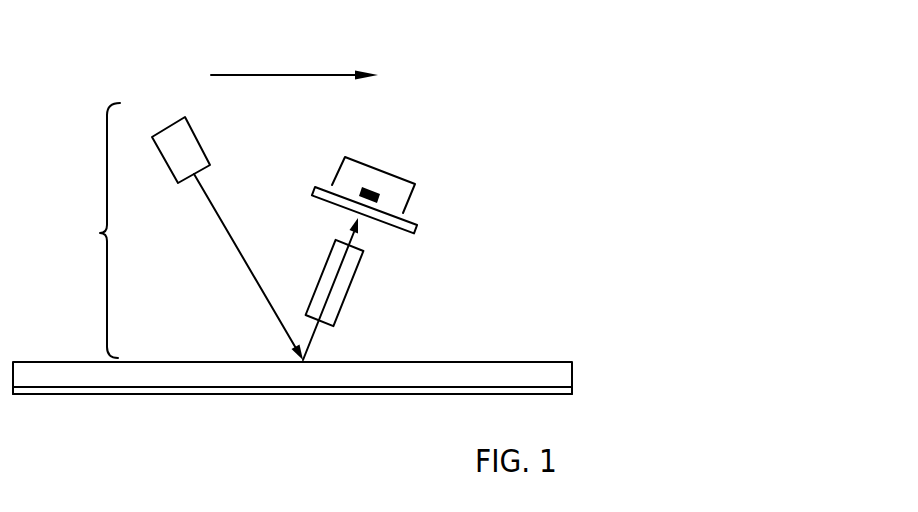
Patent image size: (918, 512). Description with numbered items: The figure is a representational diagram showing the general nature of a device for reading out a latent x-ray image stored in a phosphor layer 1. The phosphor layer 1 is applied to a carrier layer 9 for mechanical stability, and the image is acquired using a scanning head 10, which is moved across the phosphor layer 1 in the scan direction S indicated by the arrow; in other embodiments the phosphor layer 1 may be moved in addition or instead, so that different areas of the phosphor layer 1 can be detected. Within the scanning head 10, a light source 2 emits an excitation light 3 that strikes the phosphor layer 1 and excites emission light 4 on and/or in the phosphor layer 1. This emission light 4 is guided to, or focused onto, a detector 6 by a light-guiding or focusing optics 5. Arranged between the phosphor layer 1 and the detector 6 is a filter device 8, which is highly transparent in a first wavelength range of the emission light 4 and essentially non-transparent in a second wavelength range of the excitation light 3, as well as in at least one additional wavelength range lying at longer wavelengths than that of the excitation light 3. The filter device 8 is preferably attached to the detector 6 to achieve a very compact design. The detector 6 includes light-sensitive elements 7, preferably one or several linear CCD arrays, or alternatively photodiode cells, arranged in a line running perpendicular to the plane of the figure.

The phosphor layer 1 is at (565, 377).
The light source 2 is at (186, 134).
The excitation light 3 is at (228, 228).
The emission light 4 is at (309, 346).
The light-guiding or focusing optics 5 is at (348, 283).
The detector 6 is at (403, 198).
The light-sensitive elements 7 is at (382, 188).
The filter device 8 is at (415, 232).
The carrier layer 9 is at (570, 390).
The scanning head 10 is at (93, 230).
The scan direction S is at (266, 75).